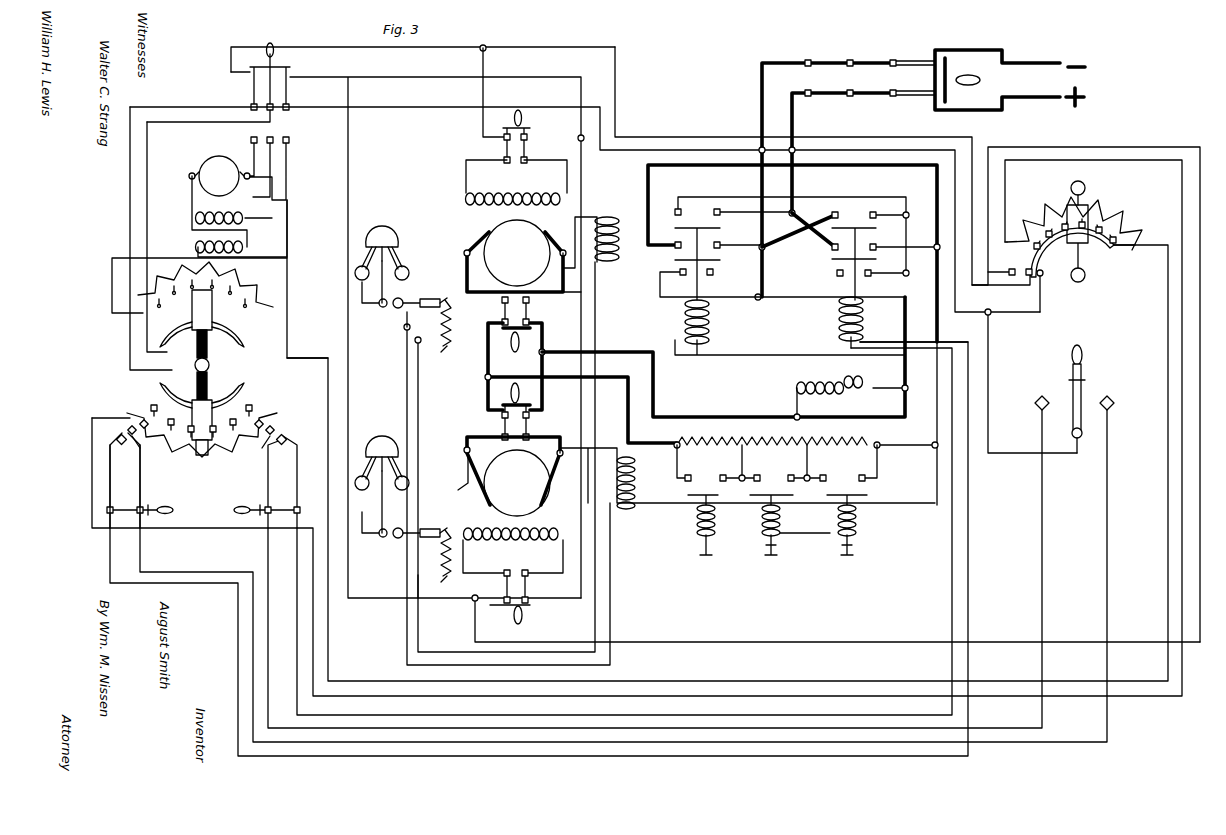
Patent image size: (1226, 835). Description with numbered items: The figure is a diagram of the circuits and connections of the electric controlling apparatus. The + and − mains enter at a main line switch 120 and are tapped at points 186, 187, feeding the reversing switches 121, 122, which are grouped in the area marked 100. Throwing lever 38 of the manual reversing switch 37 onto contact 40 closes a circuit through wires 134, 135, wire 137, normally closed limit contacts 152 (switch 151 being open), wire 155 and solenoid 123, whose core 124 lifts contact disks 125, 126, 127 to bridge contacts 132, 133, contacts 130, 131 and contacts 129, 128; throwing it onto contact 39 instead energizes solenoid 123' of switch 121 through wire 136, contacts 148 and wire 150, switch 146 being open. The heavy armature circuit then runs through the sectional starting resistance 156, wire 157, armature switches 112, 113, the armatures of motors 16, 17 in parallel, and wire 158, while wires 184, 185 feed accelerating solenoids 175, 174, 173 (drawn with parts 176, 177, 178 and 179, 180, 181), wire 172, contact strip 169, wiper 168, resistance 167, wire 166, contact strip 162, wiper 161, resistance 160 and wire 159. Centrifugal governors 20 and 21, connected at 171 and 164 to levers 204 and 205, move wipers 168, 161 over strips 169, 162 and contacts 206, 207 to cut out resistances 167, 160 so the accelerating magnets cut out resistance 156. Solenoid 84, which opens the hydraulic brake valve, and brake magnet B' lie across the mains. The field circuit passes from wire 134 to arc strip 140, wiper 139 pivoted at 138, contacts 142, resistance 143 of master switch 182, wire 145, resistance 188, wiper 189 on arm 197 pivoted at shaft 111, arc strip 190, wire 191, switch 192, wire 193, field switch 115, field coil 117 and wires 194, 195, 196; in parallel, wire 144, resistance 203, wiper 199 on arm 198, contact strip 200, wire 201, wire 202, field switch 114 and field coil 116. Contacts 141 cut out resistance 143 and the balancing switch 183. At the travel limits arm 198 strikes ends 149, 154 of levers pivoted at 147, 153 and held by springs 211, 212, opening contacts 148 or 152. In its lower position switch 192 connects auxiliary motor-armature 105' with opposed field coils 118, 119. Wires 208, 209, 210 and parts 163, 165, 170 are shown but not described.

The wire 202 is at (355, 50).
The conductor 210 is at (620, 72).
The conductor 208 is at (635, 642).
The switch 192 is at (248, 88).
The wire 193 is at (355, 99).
The wire 195 is at (538, 77).
The wire 196 is at (410, 108).
The wire 134 is at (890, 150).
The wire 135 is at (990, 390).
The junction 209 is at (579, 137).
The field switch 114 is at (503, 146).
The field coil 116 is at (516, 193).
The auxiliary motor-armature 105' is at (239, 168).
The field coil 118 is at (208, 216).
The field coil 119 is at (243, 246).
The wire 191 is at (147, 224).
The wire 201 is at (140, 285).
The automatic balancing switch 183 is at (280, 336).
The resistance 188 is at (245, 290).
The arc strip 190 is at (190, 314).
The wiper 189 is at (214, 314).
The arm 197 is at (209, 338).
The shaft 111 is at (211, 362).
The arm 198 is at (210, 380).
The wiper 199 is at (212, 412).
The contact strip 200 is at (180, 396).
The resistance 203 is at (215, 458).
The limit contacts 152 is at (117, 439).
The pivot 153 is at (132, 426).
The lever end 154 is at (145, 421).
The spring 212 is at (142, 450).
The spring 211 is at (258, 450).
The lever end 149 is at (260, 421).
The pivot 147 is at (272, 429).
The limit contacts 148 is at (286, 440).
The switch 151 is at (128, 502).
The switch 146 is at (281, 510).
The wire 144 is at (318, 636).
The wire 155 is at (110, 555).
The wire 137 is at (148, 553).
The wire 136 is at (332, 728).
The wire 150 is at (422, 713).
The wire 145 is at (307, 358).
The wire 159 is at (597, 318).
The wire 172 is at (400, 409).
The wire 166 is at (422, 426).
The centrifugal governor 20 is at (388, 264).
The contact 170 is at (392, 300).
The connection 171 is at (375, 306).
The lever 204 is at (407, 308).
The contact 206 is at (442, 322).
The wiper 168 is at (442, 290).
The contact strip 169 is at (403, 330).
The resistance 167 is at (440, 350).
The centrifugal governor 21 is at (380, 484).
The contact 165 is at (380, 526).
The connection 164 is at (363, 529).
The contact 163 is at (405, 548).
The contact strip 162 is at (412, 562).
The contact 207 is at (448, 549).
The lever 205 is at (420, 528).
The wiper 161 is at (462, 488).
The resistance 160 is at (443, 572).
The motor-armature 16 is at (530, 238).
The armature switch 112 is at (528, 311).
The wire 194 is at (529, 366).
The armature switch 113 is at (528, 424).
The wire 157 is at (628, 416).
The wire 158 is at (683, 415).
The motor 17 is at (500, 487).
The field coil 117 is at (527, 532).
The field switch 115 is at (528, 587).
The reversing switch 121 is at (614, 274).
The brake magnet B' is at (747, 478).
The point 187 is at (758, 135).
The point 186 is at (798, 145).
The main switch 120 is at (1010, 80).
The controller 100 is at (765, 356).
The contact 130 is at (809, 231).
The contact 129 is at (845, 208).
The contact 128 is at (882, 208).
The contact 131 is at (882, 241).
The contact disk 127 is at (868, 259).
The reversing switch 122 is at (835, 268).
The contact disk 126 is at (890, 259).
The contact 132 is at (838, 282).
The contact 133 is at (883, 280).
The contact disk 125 is at (889, 297).
The solenoid 123' is at (717, 322).
The solenoid 123 is at (826, 319).
The core 124 is at (845, 340).
The solenoid 84 is at (836, 382).
The wire 184 is at (940, 340).
The sectional starting resistance 156 is at (870, 447).
The wire 185 is at (798, 469).
The contact plate 179 is at (686, 495).
The contact plate 180 is at (759, 493).
The contact plate 181 is at (833, 493).
The accelerating solenoid 173 is at (713, 522).
The accelerating solenoid 174 is at (782, 518).
The accelerating solenoid 175 is at (860, 521).
The core 176 is at (722, 545).
The core 177 is at (791, 545).
The core 178 is at (871, 545).
The reversing switch 37 is at (1090, 352).
The lever 38 is at (1082, 384).
The contact 39 is at (1040, 393).
The contact 40 is at (1113, 393).
The pivot 138 is at (1082, 283).
The wiper 139 is at (1078, 225).
The master switch 182 is at (1096, 188).
The arc contact strip 140 is at (1072, 252).
The resistance 143 is at (1122, 215).
The contacts 142 is at (1130, 250).
The contacts 141 is at (1016, 270).